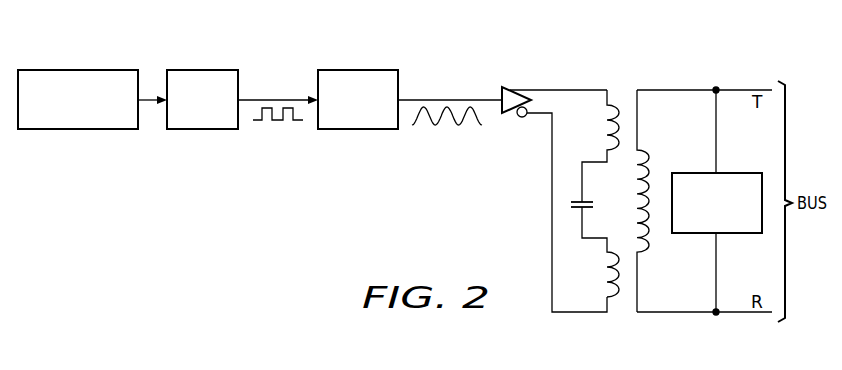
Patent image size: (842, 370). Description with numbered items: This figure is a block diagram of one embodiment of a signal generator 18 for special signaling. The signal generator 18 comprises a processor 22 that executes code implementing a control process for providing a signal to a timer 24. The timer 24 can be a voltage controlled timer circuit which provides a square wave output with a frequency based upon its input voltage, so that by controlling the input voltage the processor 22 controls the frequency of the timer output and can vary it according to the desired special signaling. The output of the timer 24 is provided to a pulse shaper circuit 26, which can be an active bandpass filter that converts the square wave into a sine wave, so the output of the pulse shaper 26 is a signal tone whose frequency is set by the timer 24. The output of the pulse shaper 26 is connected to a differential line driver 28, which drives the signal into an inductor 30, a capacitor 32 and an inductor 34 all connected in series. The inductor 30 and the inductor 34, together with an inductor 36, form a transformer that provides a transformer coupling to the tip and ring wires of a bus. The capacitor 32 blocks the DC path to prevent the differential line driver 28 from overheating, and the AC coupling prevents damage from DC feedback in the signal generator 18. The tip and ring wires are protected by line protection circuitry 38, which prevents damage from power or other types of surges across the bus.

The signal generator 18 is at (206, 220).
The processor 22 is at (78, 69).
The timer 24 is at (203, 69).
The pulse shaper circuit 26 is at (358, 69).
The differential line driver 28 is at (514, 117).
The inductor 30 is at (612, 102).
The capacitor 32 is at (593, 203).
The inductor 34 is at (610, 300).
The inductor 36 is at (651, 246).
The line protection circuitry 38 is at (738, 173).